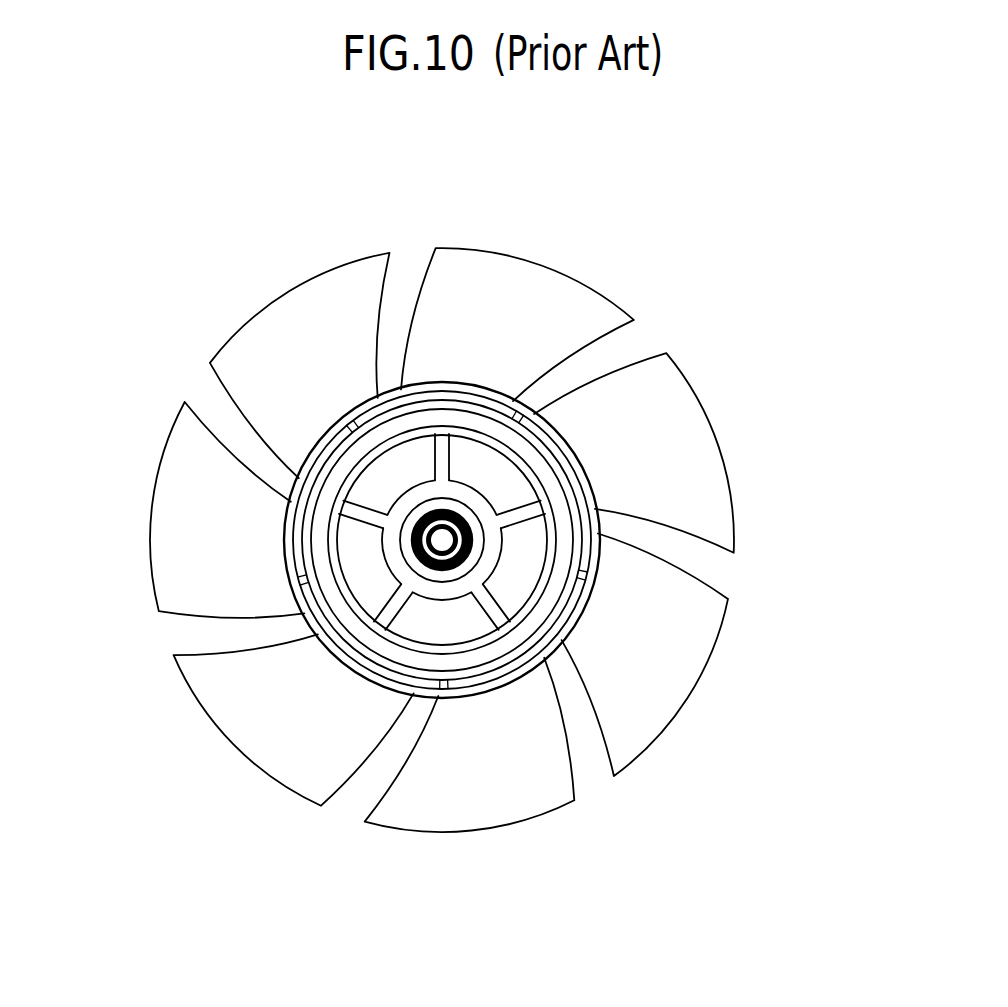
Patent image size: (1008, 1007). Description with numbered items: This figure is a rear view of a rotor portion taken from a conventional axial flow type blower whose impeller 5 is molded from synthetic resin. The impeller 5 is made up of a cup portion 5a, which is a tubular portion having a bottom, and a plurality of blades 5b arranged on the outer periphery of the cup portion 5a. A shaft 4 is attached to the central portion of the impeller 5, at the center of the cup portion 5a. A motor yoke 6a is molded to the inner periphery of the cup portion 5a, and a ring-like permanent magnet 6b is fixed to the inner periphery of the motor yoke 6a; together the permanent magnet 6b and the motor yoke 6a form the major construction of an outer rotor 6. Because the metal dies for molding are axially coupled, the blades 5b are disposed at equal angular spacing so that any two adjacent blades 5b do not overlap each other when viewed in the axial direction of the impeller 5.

The shaft 4 is at (423, 541).
The impeller 5 is at (270, 824).
The cup portion 5a is at (540, 400).
The blades 5b is at (497, 292).
The rotor 6 is at (625, 864).
The motor yoke 6a is at (490, 665).
The permanent magnet 6b is at (545, 605).